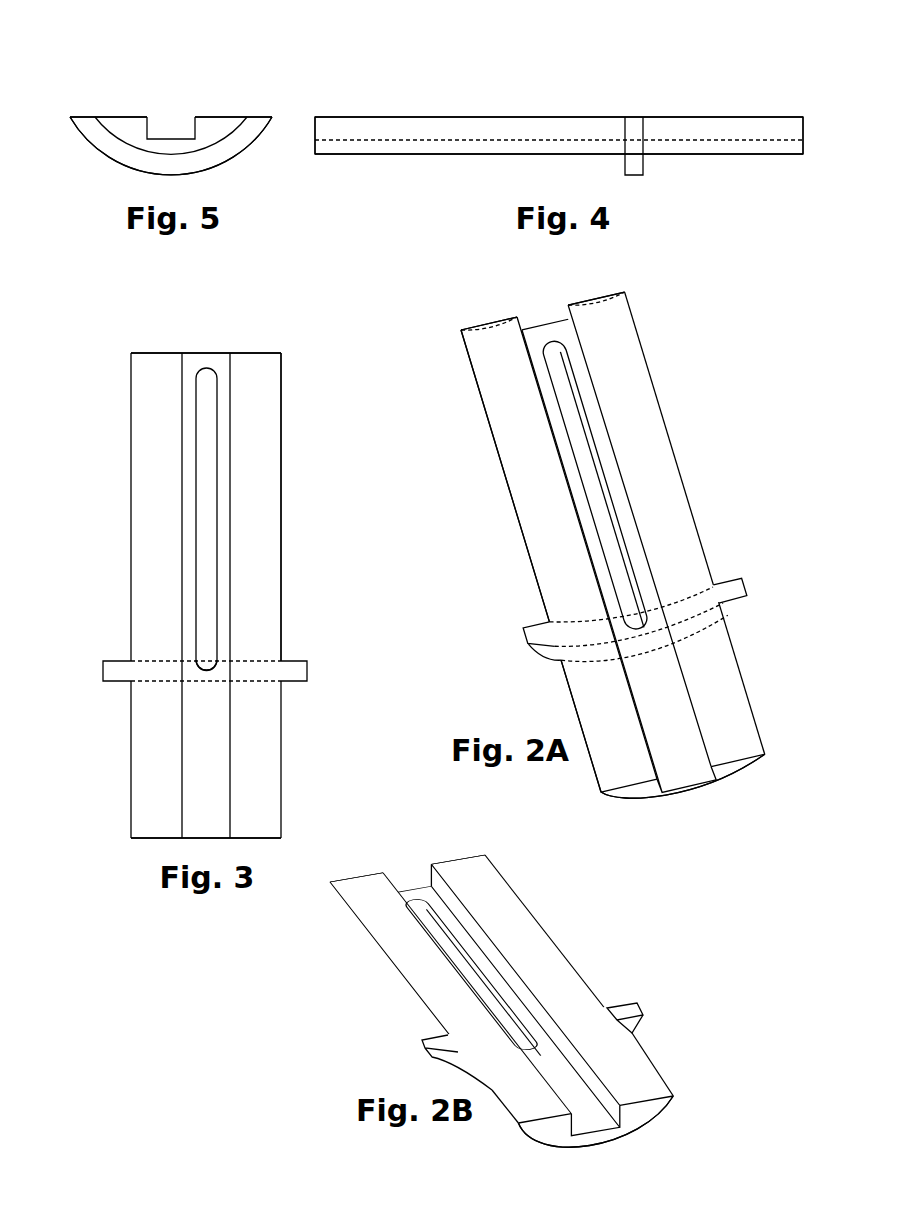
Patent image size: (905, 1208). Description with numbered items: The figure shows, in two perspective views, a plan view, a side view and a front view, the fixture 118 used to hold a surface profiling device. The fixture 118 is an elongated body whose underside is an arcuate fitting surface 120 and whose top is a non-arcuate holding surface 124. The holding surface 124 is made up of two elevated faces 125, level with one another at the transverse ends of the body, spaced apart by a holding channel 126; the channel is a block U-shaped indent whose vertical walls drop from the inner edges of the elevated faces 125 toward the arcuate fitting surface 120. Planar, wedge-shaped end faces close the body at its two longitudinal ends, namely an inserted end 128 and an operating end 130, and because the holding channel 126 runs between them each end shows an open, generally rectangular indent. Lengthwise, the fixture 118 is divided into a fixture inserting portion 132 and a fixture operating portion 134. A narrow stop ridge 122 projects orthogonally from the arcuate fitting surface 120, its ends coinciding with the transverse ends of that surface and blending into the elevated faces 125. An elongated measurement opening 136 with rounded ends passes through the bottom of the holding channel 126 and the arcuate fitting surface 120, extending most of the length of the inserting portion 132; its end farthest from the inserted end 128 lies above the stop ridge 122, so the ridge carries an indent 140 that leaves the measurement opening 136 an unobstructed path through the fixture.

In FIG. 5, the fixture 118 is at (95, 77).
In FIG. 4, the fixture 118 is at (498, 77).
In FIG. 3, the fixture 118 is at (100, 345).
In FIG. 2A, the fixture 118 is at (693, 397).
In FIG. 2B, the fixture 118 is at (680, 1032).
In FIG. 5, the arcuate fitting surface 120 is at (133, 138).
In FIG. 4, the arcuate fitting surface 120 is at (417, 150).
In FIG. 2A, the arcuate fitting surface 120 is at (528, 548).
In FIG. 2B, the arcuate fitting surface 120 is at (519, 1120).
In FIG. 5, the stop ridge 122 is at (230, 148).
In FIG. 4, the stop ridge 122 is at (637, 175).
In FIG. 3, the stop ridge 122 is at (308, 670).
In FIG. 2A, the stop ridge 122 is at (747, 580).
In FIG. 2B, the stop ridge 122 is at (437, 1058).
In FIG. 5, the non-arcuate holding surface 124 is at (122, 127).
In FIG. 4, the non-arcuate holding surface 124 is at (378, 130).
In FIG. 3, the non-arcuate holding surface 124 is at (255, 402).
In FIG. 2A, the non-arcuate holding surface 124 is at (515, 393).
In FIG. 2B, the non-arcuate holding surface 124 is at (417, 962).
In FIG. 5, the elevated faces 125 is at (112, 125).
In FIG. 3, the elevated faces 125 is at (152, 427).
In FIG. 2A, the elevated faces 125 is at (628, 398).
In FIG. 2B, the elevated faces 125 is at (555, 973).
In FIG. 5, the holding channel 126 is at (177, 125).
In FIG. 3, the holding channel 126 is at (213, 343).
In FIG. 2A, the holding channel 126 is at (685, 762).
In FIG. 2B, the holding channel 126 is at (592, 1122).
In FIG. 3, the inserted end 128 is at (160, 353).
In FIG. 2A, the inserted end 128 is at (588, 300).
In FIG. 2B, the inserted end 128 is at (360, 874).
In FIG. 3, the operating end 130 is at (160, 840).
In FIG. 2A, the operating end 130 is at (730, 768).
In FIG. 2B, the operating end 130 is at (560, 1133).
In FIG. 4, the fixture inserting portion 132 is at (557, 110).
In FIG. 3, the fixture inserting portion 132 is at (292, 477).
In FIG. 2A, the fixture inserting portion 132 is at (687, 443).
In FIG. 2B, the fixture inserting portion 132 is at (537, 900).
In FIG. 4, the fixture operating portion 134 is at (703, 110).
In FIG. 3, the fixture operating portion 134 is at (290, 730).
In FIG. 2A, the fixture operating portion 134 is at (755, 672).
In FIG. 2B, the fixture operating portion 134 is at (660, 1060).
In FIG. 3, the measurement opening 136 is at (210, 510).
In FIG. 2A, the measurement opening 136 is at (555, 370).
In FIG. 2B, the measurement opening 136 is at (423, 918).
In FIG. 4, the indent 140 is at (620, 147).
In FIG. 3, the indent 140 is at (192, 665).